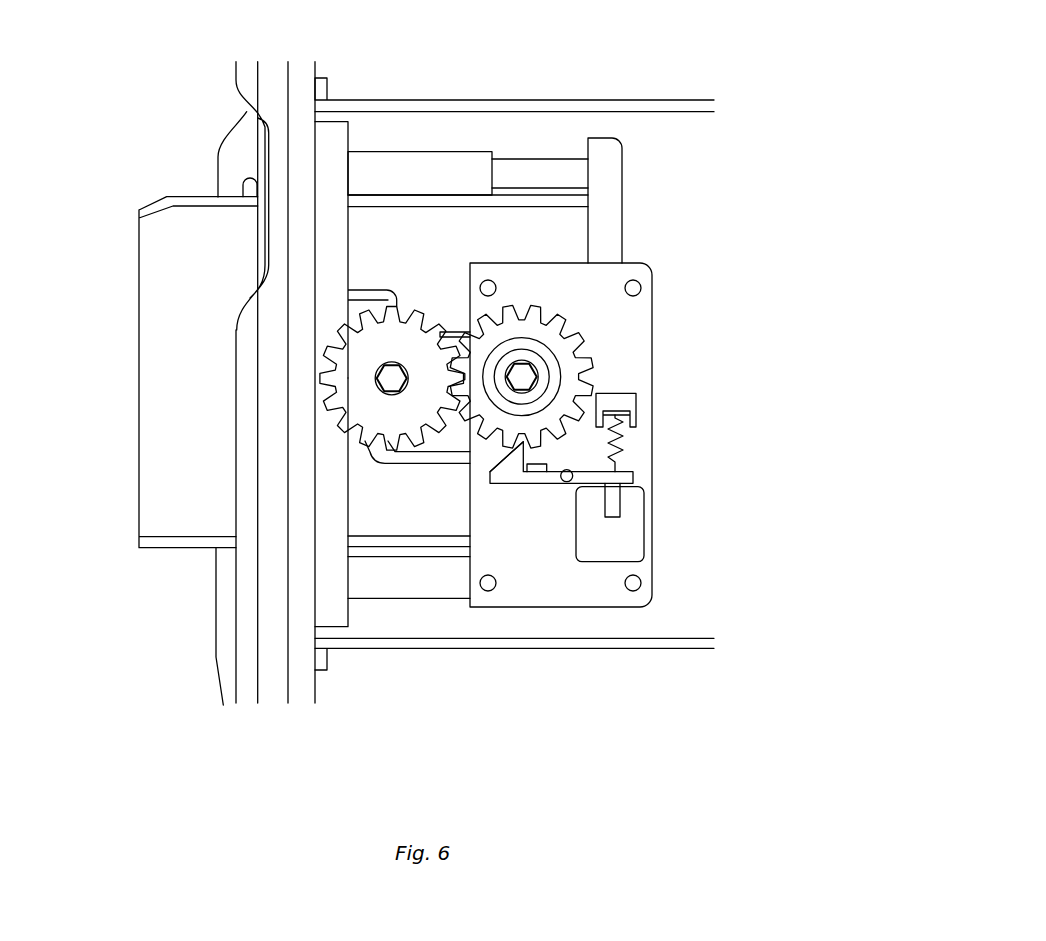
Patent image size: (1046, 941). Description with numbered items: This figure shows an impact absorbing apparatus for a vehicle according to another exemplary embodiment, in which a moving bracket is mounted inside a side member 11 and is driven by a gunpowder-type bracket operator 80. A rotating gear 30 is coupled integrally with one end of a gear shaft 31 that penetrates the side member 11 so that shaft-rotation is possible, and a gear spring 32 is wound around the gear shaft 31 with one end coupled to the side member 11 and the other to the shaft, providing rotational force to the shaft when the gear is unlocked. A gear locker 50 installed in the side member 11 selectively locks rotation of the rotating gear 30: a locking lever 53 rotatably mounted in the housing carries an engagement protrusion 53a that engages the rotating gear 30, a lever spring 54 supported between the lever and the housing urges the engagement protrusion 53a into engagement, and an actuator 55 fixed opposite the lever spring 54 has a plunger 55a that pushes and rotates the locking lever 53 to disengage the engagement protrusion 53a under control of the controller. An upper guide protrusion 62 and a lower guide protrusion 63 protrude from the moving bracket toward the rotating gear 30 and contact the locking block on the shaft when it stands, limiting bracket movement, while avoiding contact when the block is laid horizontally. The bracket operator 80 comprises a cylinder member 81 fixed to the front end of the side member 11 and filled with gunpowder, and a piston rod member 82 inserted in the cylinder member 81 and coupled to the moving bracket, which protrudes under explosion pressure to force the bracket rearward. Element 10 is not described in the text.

The main body 10 is at (157, 322).
The side member 11 is at (668, 105).
The rotating gear 30 is at (360, 408).
The gear shaft 31 is at (393, 378).
The gear spring 32 is at (522, 362).
The gear locker 50 is at (672, 578).
The locking lever 53 is at (532, 475).
The engagement protrusion 53a is at (495, 463).
The lever spring 54 is at (623, 447).
The actuator 55 is at (627, 540).
The plunger 55a is at (615, 503).
The upper guide protrusion 62 is at (372, 288).
The lower guide protrusion 63 is at (410, 457).
The bracket operator 80 is at (452, 128).
The cylinder member 81 is at (410, 172).
The piston rod member 82 is at (560, 172).